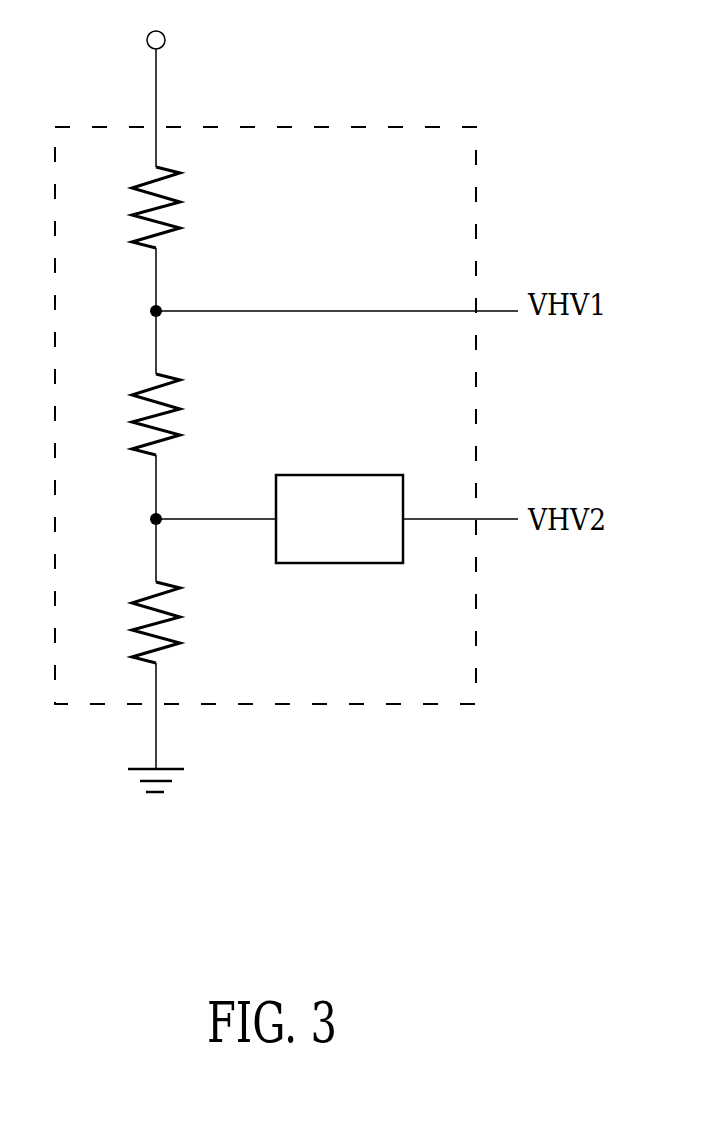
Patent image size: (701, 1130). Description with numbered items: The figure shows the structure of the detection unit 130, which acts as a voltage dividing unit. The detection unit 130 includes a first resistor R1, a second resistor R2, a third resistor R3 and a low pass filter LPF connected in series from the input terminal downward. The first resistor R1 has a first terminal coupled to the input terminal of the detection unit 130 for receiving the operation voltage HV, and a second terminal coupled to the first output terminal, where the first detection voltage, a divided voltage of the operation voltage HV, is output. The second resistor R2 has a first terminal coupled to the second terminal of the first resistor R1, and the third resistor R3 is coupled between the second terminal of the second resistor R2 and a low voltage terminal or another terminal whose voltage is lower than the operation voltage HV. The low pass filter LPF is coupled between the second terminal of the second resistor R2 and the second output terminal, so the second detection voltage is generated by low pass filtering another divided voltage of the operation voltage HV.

The detection unit 130 is at (388, 127).
The first resistor R1 is at (181, 207).
The second resistor R2 is at (181, 414).
The third resistor R3 is at (181, 622).
The low pass filter LPF is at (339, 519).
The operation voltage HV is at (182, 30).